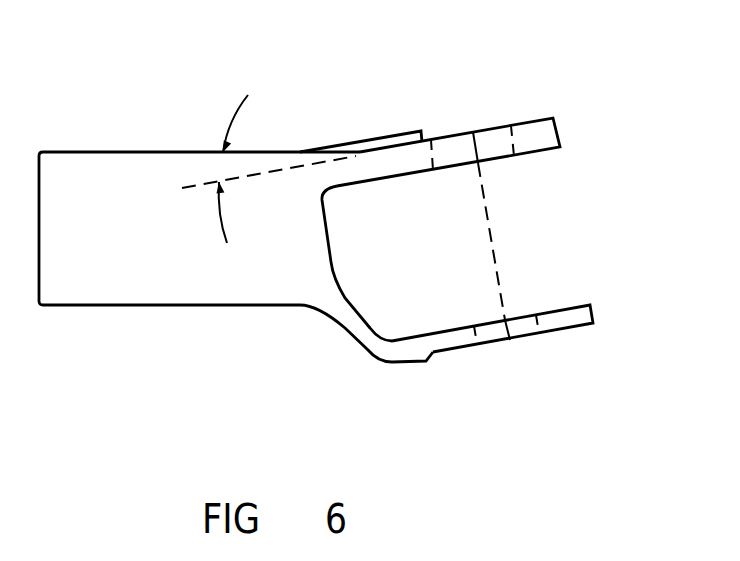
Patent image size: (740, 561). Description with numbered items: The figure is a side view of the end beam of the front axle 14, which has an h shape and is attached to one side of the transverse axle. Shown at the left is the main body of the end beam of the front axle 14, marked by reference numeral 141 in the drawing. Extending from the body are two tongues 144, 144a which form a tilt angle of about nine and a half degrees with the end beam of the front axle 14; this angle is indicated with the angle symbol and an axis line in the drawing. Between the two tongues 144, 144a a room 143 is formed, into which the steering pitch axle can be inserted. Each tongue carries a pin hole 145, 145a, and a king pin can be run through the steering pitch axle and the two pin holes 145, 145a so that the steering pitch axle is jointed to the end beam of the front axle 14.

The front axle end beam 14 is at (68, 147).
The base plate 141 is at (118, 185).
The room 143 is at (408, 283).
The tongue 144 is at (550, 140).
The pin hole 145 is at (483, 145).
The tongue 144a is at (577, 320).
The pin hole 145a is at (522, 327).